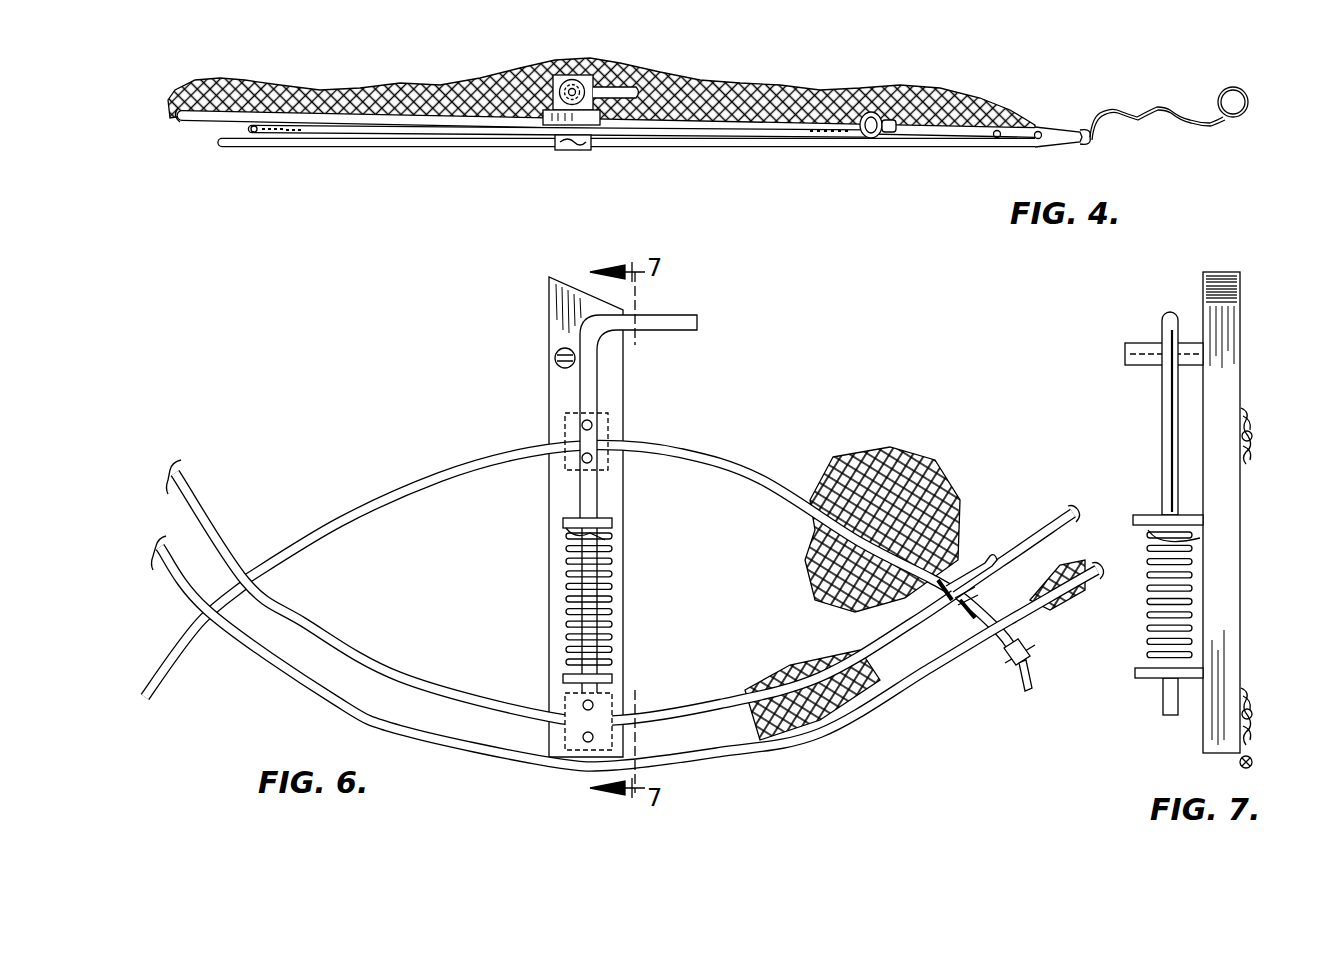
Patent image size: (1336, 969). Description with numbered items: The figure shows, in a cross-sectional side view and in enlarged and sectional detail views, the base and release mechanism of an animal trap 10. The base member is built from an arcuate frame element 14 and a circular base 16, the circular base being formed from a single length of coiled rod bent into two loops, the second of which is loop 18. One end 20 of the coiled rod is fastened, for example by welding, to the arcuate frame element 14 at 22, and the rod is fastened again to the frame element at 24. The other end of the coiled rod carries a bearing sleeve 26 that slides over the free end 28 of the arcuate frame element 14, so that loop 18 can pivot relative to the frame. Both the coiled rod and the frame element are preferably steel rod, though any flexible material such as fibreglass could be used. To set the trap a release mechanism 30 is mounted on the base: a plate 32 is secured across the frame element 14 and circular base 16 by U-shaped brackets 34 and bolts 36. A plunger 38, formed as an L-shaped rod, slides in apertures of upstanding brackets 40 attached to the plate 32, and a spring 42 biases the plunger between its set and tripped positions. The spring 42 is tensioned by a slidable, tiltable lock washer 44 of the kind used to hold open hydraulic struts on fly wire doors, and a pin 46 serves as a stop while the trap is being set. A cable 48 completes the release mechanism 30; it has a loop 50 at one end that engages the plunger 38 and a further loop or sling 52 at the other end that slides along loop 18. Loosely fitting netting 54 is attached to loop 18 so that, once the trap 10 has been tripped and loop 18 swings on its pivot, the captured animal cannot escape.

In FIG. 4, the animal trap 10 is at (920, 84).
In FIG. 4, the arcuate frame element 14 is at (785, 125).
In FIG. 6, the arcuate frame element 14 is at (320, 512).
In FIG. 7, the arcuate frame element 14 is at (1252, 433).
In FIG. 4, the circular base 16 is at (330, 148).
In FIG. 6, the circular base 16 is at (305, 615).
In FIG. 7, the circular base 16 is at (1253, 722).
In FIG. 4, the loop 18 is at (203, 122).
In FIG. 6, the loop 18 is at (268, 660).
In FIG. 7, the loop 18 is at (1253, 760).
In FIG. 6, the end 20 is at (973, 567).
In FIG. 6, the fastening point 22 is at (967, 597).
In FIG. 6, the fastening point 24 is at (1022, 658).
In FIG. 4, the bearing sleeve 26 is at (864, 140).
In FIG. 6, the bearing sleeve 26 is at (997, 673).
In FIG. 4, the free end 28 is at (893, 134).
In FIG. 6, the free end 28 is at (1026, 692).
In FIG. 6, the release mechanism 30 is at (655, 470).
In FIG. 4, the plate 32 is at (550, 108).
In FIG. 6, the plate 32 is at (562, 393).
In FIG. 7, the plate 32 is at (1226, 325).
In FIG. 4, the U-shaped brackets 34 is at (557, 150).
In FIG. 6, the U-shaped brackets 34 is at (566, 432).
In FIG. 7, the U-shaped brackets 34 is at (1243, 407).
In FIG. 4, the bolts 36 is at (582, 150).
In FIG. 6, the bolts 36 is at (615, 420).
In FIG. 7, the bolts 36 is at (1245, 417).
In FIG. 4, the plunger 38 is at (618, 88).
In FIG. 6, the plunger 38 is at (592, 498).
In FIG. 7, the plunger 38 is at (1158, 397).
In FIG. 4, the upstanding brackets 40 is at (588, 78).
In FIG. 6, the upstanding brackets 40 is at (612, 523).
In FIG. 7, the upstanding brackets 40 is at (1140, 517).
In FIG. 4, the spring 42 is at (559, 72).
In FIG. 6, the spring 42 is at (610, 602).
In FIG. 7, the spring 42 is at (1147, 603).
In FIG. 6, the lock washer 44 is at (568, 540).
In FIG. 7, the lock washer 44 is at (1203, 533).
In FIG. 6, the pin 46 is at (555, 353).
In FIG. 7, the pin 46 is at (1125, 357).
In FIG. 4, the cable 48 is at (1157, 108).
In FIG. 4, the loop 50 is at (1228, 88).
In FIG. 4, the sling 52 is at (1053, 126).
In FIG. 4, the netting 54 is at (405, 82).
In FIG. 6, the netting 54 is at (923, 500).